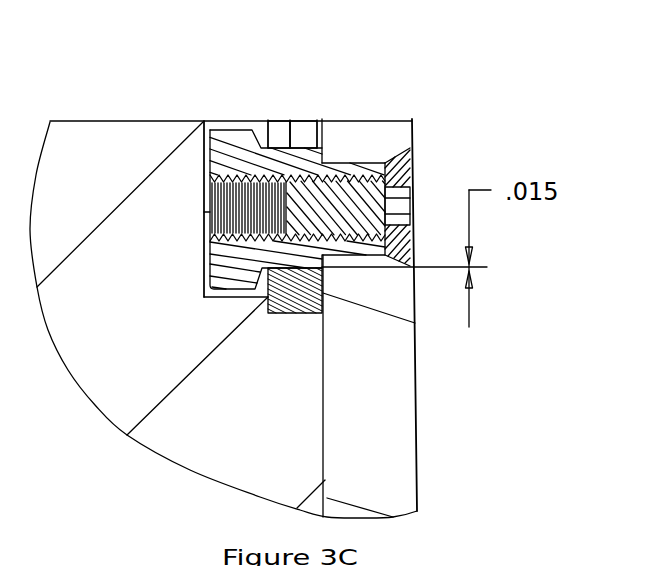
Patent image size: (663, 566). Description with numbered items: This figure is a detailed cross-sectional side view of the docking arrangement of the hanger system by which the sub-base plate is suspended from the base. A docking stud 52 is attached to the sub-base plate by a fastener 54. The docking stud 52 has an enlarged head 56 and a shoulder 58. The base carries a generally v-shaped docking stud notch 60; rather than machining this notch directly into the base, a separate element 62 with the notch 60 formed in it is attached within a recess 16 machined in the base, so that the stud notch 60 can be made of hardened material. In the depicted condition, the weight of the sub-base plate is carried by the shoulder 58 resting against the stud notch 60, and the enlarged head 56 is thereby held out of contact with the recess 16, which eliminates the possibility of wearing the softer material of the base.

The recess 16 is at (207, 118).
The docking stud 52 is at (255, 115).
The fastener 54 is at (412, 175).
The enlarged head 56 is at (221, 122).
The shoulder 58 is at (304, 122).
The docking stud notch 60 is at (304, 116).
The separate element 62 is at (308, 313).